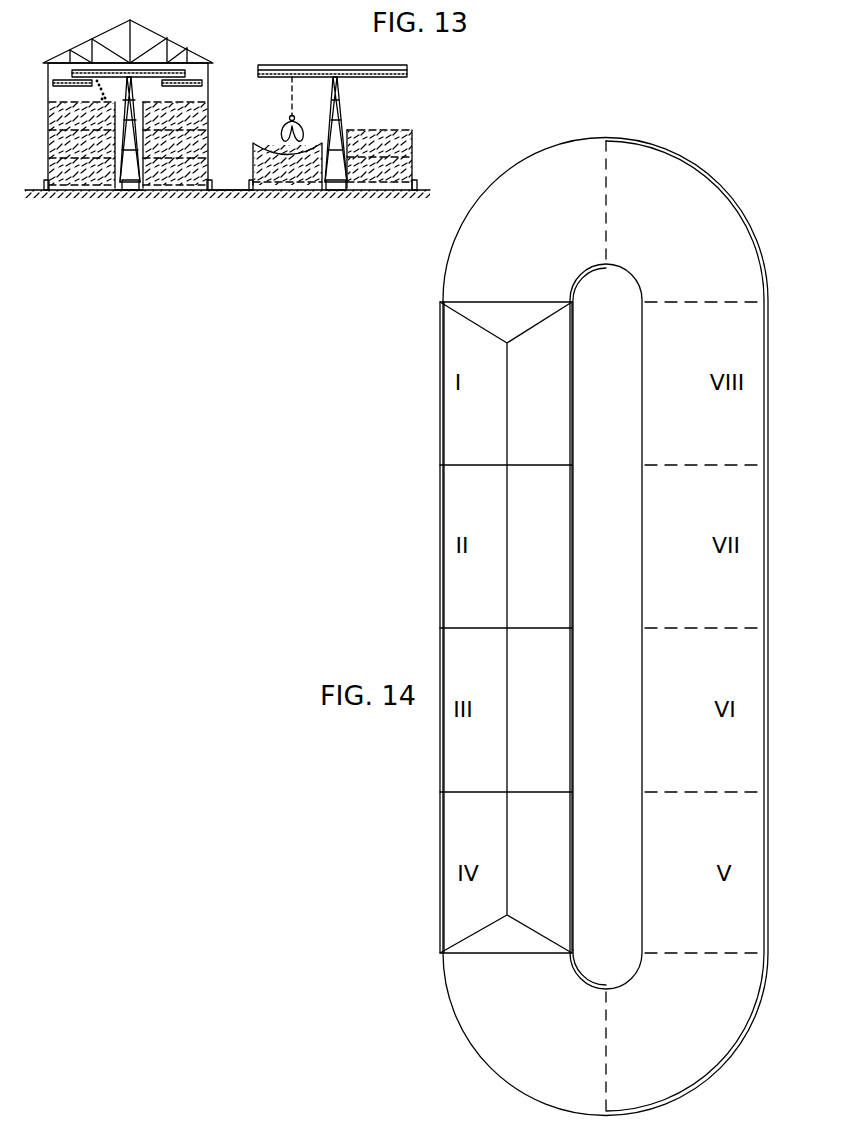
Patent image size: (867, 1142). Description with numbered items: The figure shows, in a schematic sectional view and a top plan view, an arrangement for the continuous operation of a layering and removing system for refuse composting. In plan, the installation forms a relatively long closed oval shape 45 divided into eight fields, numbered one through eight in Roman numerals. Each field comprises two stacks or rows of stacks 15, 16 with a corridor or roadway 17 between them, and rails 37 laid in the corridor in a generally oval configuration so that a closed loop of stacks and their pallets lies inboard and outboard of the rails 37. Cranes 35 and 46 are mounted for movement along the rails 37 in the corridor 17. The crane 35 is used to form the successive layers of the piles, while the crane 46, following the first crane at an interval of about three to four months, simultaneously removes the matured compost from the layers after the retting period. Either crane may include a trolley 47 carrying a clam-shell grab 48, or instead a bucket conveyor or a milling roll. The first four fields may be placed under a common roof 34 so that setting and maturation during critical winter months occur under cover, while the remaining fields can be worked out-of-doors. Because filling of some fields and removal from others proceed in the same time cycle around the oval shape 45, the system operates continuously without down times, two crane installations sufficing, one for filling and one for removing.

In FIG. 13, the stack 15 is at (89, 208).
In FIG. 13, the stack 16 is at (179, 208).
In FIG. 13, the corridor 17 is at (131, 192).
In FIG. 14, the corridor 17 is at (614, 401).
In FIG. 13, the roof 34 is at (95, 42).
In FIG. 14, the roof 34 is at (501, 557).
In FIG. 13, the crane 35 is at (125, 140).
In FIG. 13, the rail 37 is at (121, 192).
In FIG. 14, the closed oval shape 45 is at (722, 156).
In FIG. 13, the crane 46 is at (342, 148).
In FIG. 13, the trolley 47 is at (295, 66).
In FIG. 13, the clam-shell grab 48 is at (299, 126).